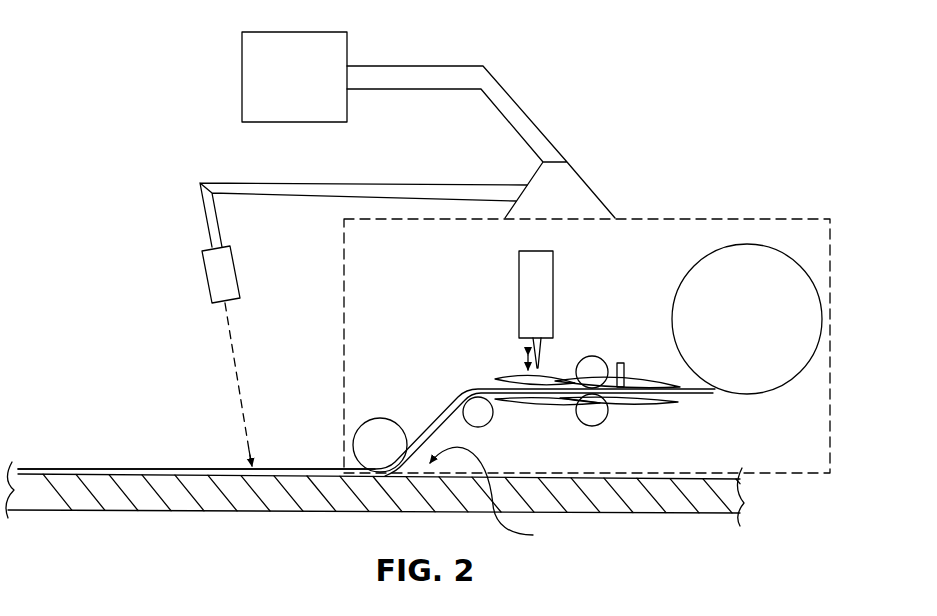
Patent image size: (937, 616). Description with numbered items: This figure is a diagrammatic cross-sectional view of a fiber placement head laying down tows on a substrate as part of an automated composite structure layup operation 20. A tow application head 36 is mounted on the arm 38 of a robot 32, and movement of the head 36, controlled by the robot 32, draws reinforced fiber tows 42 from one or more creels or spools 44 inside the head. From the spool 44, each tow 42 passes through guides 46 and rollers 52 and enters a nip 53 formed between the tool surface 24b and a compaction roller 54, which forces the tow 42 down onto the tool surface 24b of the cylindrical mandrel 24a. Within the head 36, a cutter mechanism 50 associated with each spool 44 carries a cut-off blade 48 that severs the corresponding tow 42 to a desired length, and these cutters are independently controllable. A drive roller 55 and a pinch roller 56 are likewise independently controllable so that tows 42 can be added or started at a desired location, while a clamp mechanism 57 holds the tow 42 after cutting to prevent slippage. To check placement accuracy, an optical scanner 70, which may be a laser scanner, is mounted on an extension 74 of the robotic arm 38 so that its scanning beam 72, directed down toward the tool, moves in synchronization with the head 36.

The automated composite structure layup operation 20 is at (138, 150).
The robot 32 is at (242, 72).
The arm 38 is at (525, 125).
The extension 74 is at (305, 195).
The optical scanner 70 is at (220, 272).
The scanning beam 72 is at (237, 373).
The tow application head 36 is at (733, 219).
The cutter mechanism 50 is at (542, 270).
The cut-off blade 48 is at (528, 344).
The guides 46 is at (553, 385).
The pinch roller 56 is at (592, 368).
The clamp mechanism 57 is at (620, 363).
The spool 44 is at (737, 336).
The tow 42 is at (697, 392).
The drive roller 55 is at (593, 408).
The rollers 52 is at (480, 414).
The compaction roller 54 is at (380, 432).
The nip 53 is at (496, 496).
The tool surface 24b is at (673, 478).
The mandrel 24a is at (638, 503).